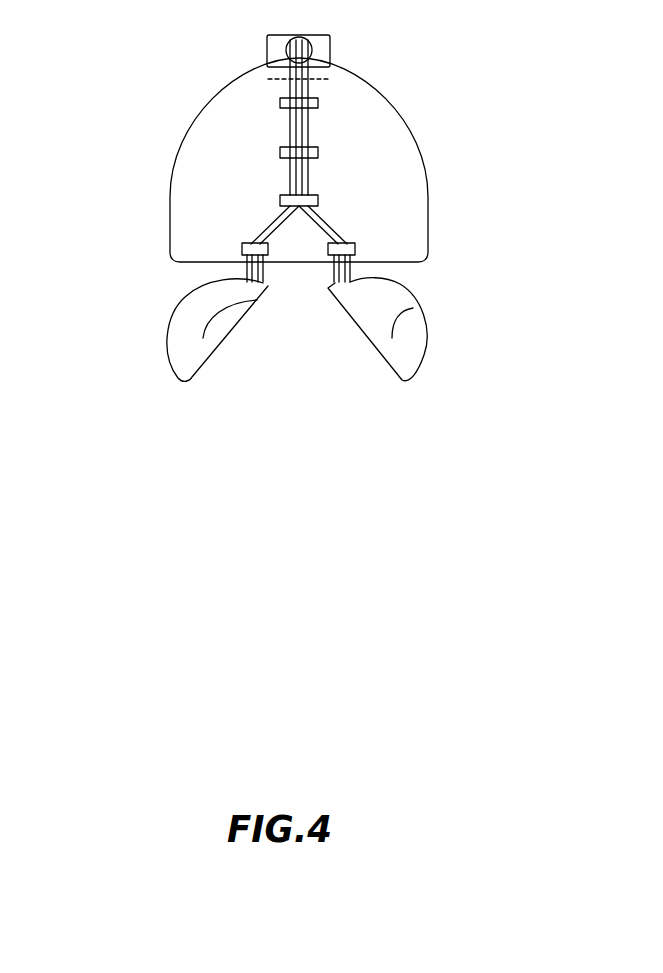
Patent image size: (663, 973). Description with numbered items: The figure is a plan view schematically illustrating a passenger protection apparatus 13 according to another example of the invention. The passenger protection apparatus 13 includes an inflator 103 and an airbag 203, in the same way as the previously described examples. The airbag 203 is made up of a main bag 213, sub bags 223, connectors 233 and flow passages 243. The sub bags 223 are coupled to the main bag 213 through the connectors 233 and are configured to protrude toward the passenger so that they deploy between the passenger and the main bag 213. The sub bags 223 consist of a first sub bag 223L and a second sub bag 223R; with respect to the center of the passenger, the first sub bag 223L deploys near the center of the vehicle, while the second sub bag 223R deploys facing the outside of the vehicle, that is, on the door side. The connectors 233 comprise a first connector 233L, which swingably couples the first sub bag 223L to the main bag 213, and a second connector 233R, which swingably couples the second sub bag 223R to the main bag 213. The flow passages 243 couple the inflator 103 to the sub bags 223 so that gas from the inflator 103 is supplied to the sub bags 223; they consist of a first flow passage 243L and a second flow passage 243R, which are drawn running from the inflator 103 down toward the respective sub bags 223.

The passenger protection apparatus 13 is at (133, 57).
The inflator 103 is at (267, 49).
The airbag 203 is at (537, 77).
The main bag 213 is at (373, 125).
The flow passages 243 is at (488, 128).
The first flow passage 243L is at (271, 224).
The second flow passage 243R is at (322, 210).
The connectors 233 is at (488, 195).
The first connector 233L is at (263, 273).
The second connector 233R is at (350, 270).
The sub bags 223 is at (488, 265).
The first sub bag 223L is at (265, 298).
The second sub bag 223R is at (413, 308).